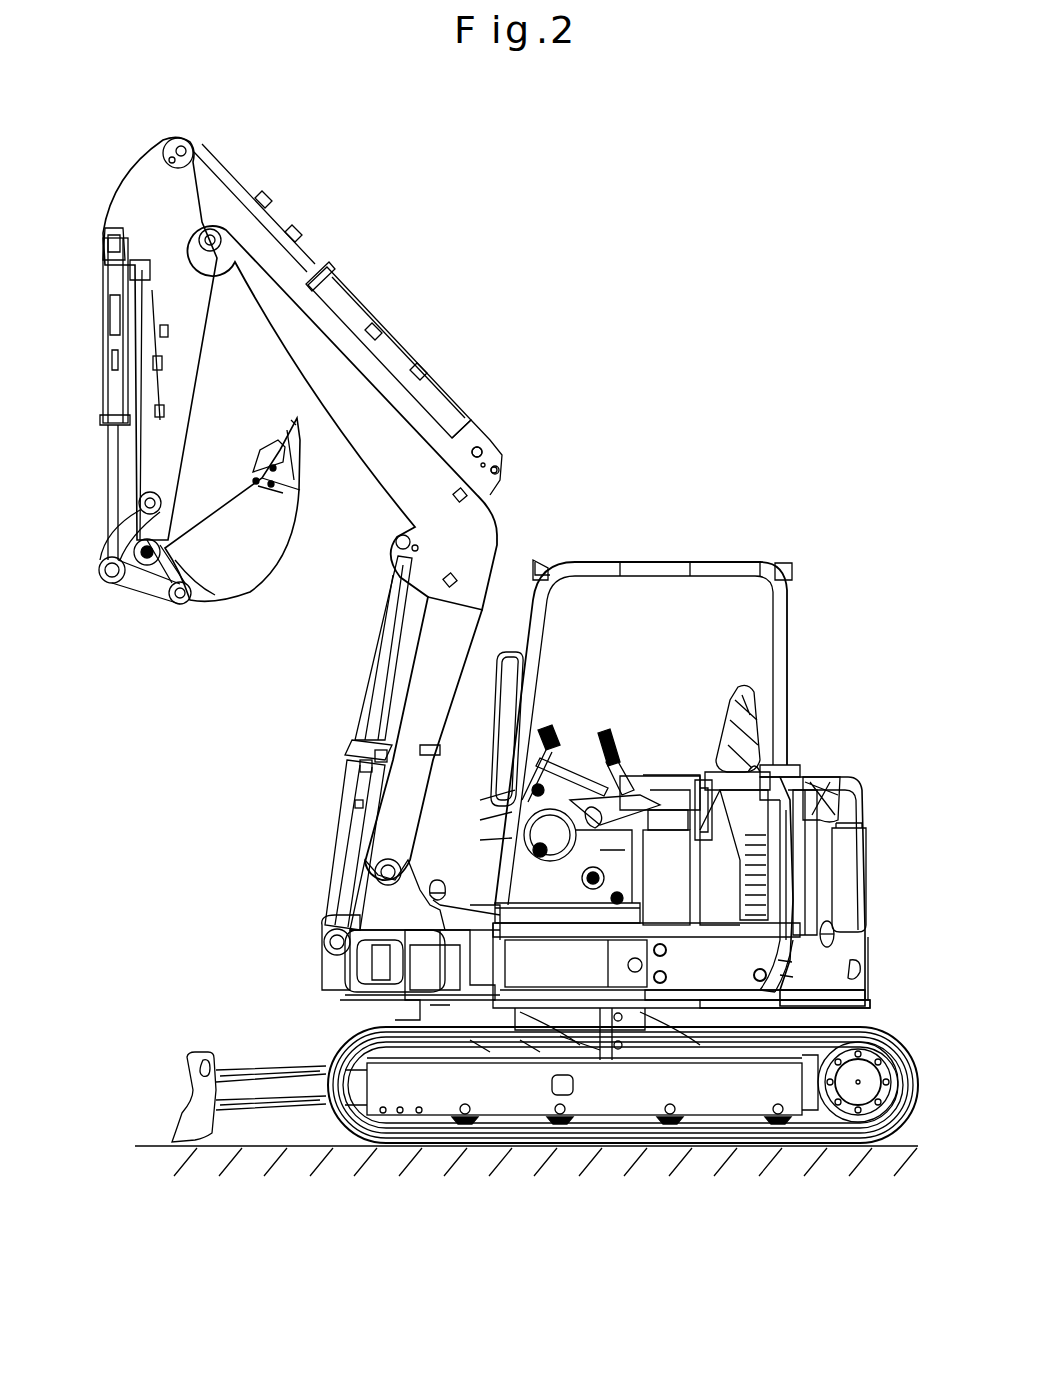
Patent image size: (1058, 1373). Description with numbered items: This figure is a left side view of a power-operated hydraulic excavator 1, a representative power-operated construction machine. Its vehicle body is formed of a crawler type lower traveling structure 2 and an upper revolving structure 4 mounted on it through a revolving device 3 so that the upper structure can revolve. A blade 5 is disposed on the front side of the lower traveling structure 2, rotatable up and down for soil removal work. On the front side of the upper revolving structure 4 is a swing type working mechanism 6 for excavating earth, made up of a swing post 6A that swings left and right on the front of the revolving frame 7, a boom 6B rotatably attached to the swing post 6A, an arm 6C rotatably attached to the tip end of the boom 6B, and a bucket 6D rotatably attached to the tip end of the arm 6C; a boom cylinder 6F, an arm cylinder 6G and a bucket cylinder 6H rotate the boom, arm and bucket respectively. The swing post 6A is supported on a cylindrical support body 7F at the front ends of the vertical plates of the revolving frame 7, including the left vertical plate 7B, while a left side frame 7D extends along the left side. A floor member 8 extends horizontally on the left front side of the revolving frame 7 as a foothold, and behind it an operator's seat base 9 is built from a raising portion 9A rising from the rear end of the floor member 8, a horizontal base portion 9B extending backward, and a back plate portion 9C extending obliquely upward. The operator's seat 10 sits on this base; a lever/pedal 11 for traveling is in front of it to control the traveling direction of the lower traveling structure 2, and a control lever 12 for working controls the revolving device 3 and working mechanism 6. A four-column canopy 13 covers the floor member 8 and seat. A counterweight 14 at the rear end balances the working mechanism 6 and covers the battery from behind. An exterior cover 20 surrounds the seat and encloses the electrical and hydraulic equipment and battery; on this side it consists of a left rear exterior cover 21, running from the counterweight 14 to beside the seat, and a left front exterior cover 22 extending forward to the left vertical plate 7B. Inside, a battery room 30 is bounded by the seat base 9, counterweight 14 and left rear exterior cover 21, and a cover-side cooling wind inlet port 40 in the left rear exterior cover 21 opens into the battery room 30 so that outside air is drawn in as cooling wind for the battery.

The power-operated hydraulic excavator 1 is at (630, 497).
The lower traveling structure 2 is at (440, 1090).
The revolving device 3 is at (665, 1000).
The upper revolving structure 4 is at (852, 776).
The blade 5 is at (195, 1087).
The swing type working mechanism 6 is at (367, 308).
The swing post 6A is at (378, 900).
The boom 6B is at (388, 440).
The arm 6C is at (178, 345).
The bucket 6D is at (257, 567).
The boom cylinder 6F is at (362, 758).
The arm cylinder 6G is at (390, 362).
The bucket cylinder 6H is at (105, 362).
The revolving frame 7 is at (600, 1005).
The left vertical plate 7B is at (465, 962).
The left side frame 7D is at (745, 1005).
The cylindrical support body 7F is at (367, 952).
The floor member 8 is at (560, 893).
The operator's seat base 9 is at (683, 778).
The raising portion 9A is at (590, 876).
The base portion 9B is at (658, 815).
The back plate portion 9C is at (703, 780).
The operator's seat 10 is at (752, 690).
The lever/pedal for traveling 11 is at (535, 815).
The control lever for working 12 is at (604, 740).
The canopy 13 is at (700, 563).
The counterweight 14 is at (853, 942).
The exterior cover 20 is at (800, 873).
The left rear exterior cover 21 is at (775, 908).
The left front exterior cover 22 is at (540, 967).
The battery room 30 is at (820, 800).
The cover-side cooling wind inlet port for electrical equipment room 40 is at (800, 850).